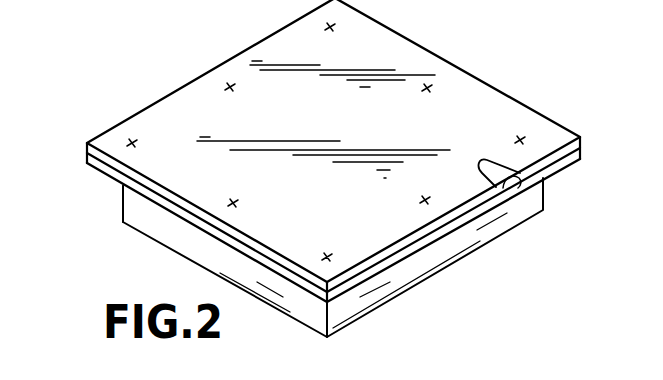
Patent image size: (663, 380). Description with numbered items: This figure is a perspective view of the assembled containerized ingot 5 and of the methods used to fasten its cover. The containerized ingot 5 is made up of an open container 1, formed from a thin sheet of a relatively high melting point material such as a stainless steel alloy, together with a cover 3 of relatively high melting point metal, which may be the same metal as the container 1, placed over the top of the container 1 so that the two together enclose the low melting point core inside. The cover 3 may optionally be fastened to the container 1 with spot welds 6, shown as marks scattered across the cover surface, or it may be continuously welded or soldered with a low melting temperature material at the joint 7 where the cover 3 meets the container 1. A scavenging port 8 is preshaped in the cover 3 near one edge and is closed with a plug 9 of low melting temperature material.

The container 1 is at (415, 270).
The cover 3 is at (349, 151).
The containerized ingot 5 is at (153, 243).
The spot welds 6 is at (430, 89).
The joint 7 is at (581, 148).
The scavenging port 8 is at (519, 183).
The plug 9 is at (519, 183).